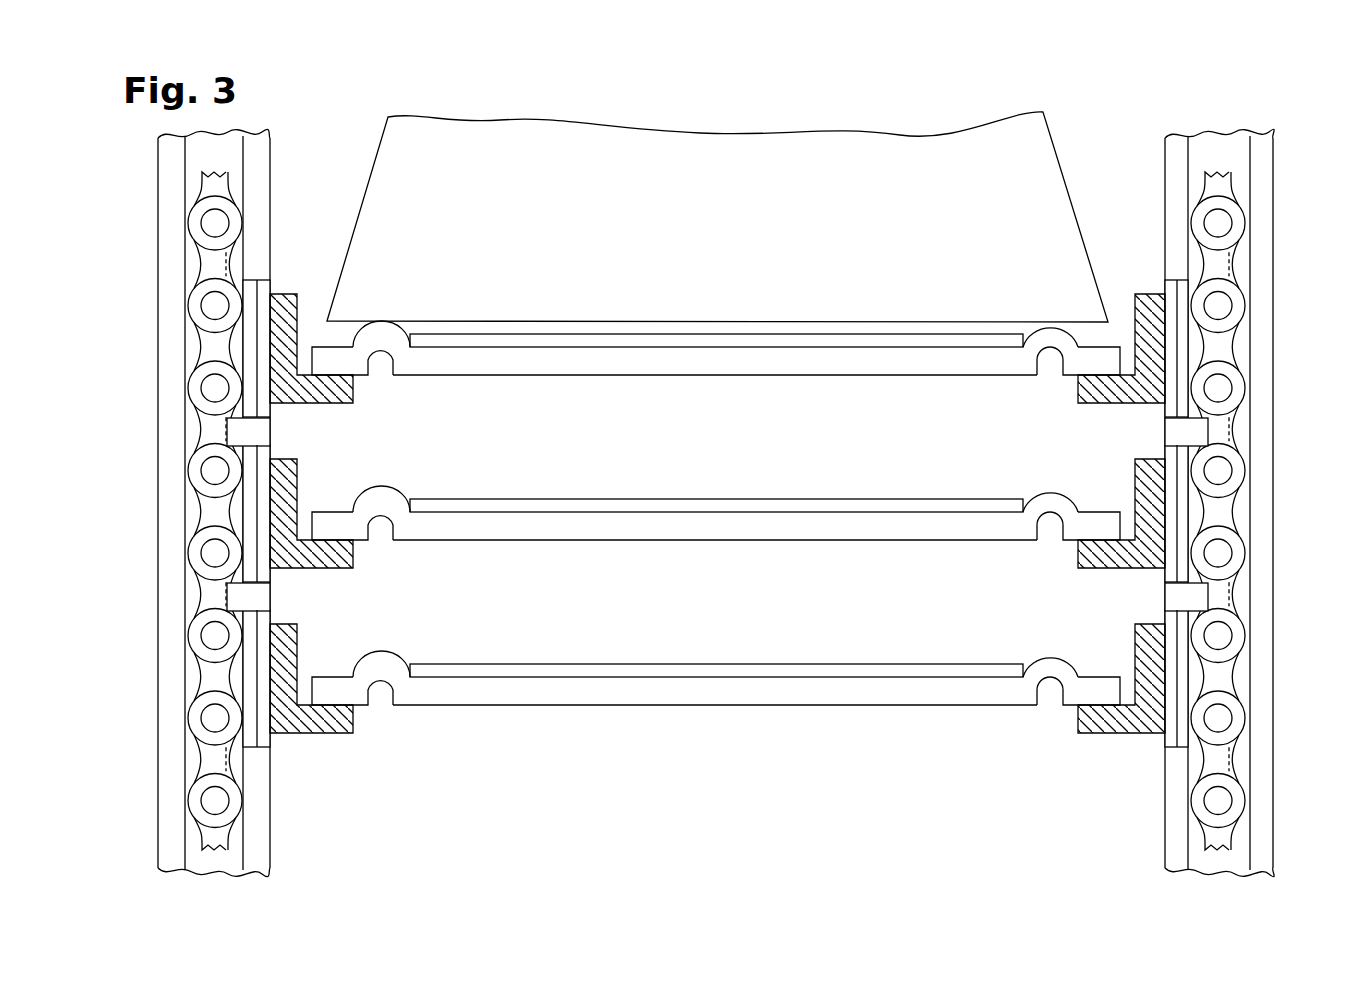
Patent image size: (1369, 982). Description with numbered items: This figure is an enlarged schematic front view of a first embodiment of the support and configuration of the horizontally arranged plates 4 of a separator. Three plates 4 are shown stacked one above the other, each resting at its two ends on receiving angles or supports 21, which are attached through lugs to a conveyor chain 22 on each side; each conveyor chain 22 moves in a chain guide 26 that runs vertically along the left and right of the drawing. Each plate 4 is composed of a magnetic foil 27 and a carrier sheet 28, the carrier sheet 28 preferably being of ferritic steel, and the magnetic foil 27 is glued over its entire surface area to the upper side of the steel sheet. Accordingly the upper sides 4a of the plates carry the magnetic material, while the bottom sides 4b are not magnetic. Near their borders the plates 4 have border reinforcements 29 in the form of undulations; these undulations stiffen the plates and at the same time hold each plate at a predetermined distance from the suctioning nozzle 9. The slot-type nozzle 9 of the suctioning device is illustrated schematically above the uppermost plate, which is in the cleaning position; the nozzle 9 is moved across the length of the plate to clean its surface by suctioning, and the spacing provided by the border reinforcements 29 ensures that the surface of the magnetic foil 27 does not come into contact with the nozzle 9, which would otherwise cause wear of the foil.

The nozzle 9 is at (937, 160).
The plate 4 is at (716, 510).
The upper side of plate 4a is at (887, 513).
The bottom side of plate 4b is at (845, 545).
The magnetic foil 27 is at (622, 667).
The carrier sheet 28 is at (862, 706).
The border reinforcement 29 is at (381, 660).
The receiving angle 21 is at (1133, 725).
The conveyor chain 22 is at (1222, 430).
The chain guide 26 is at (1262, 262).